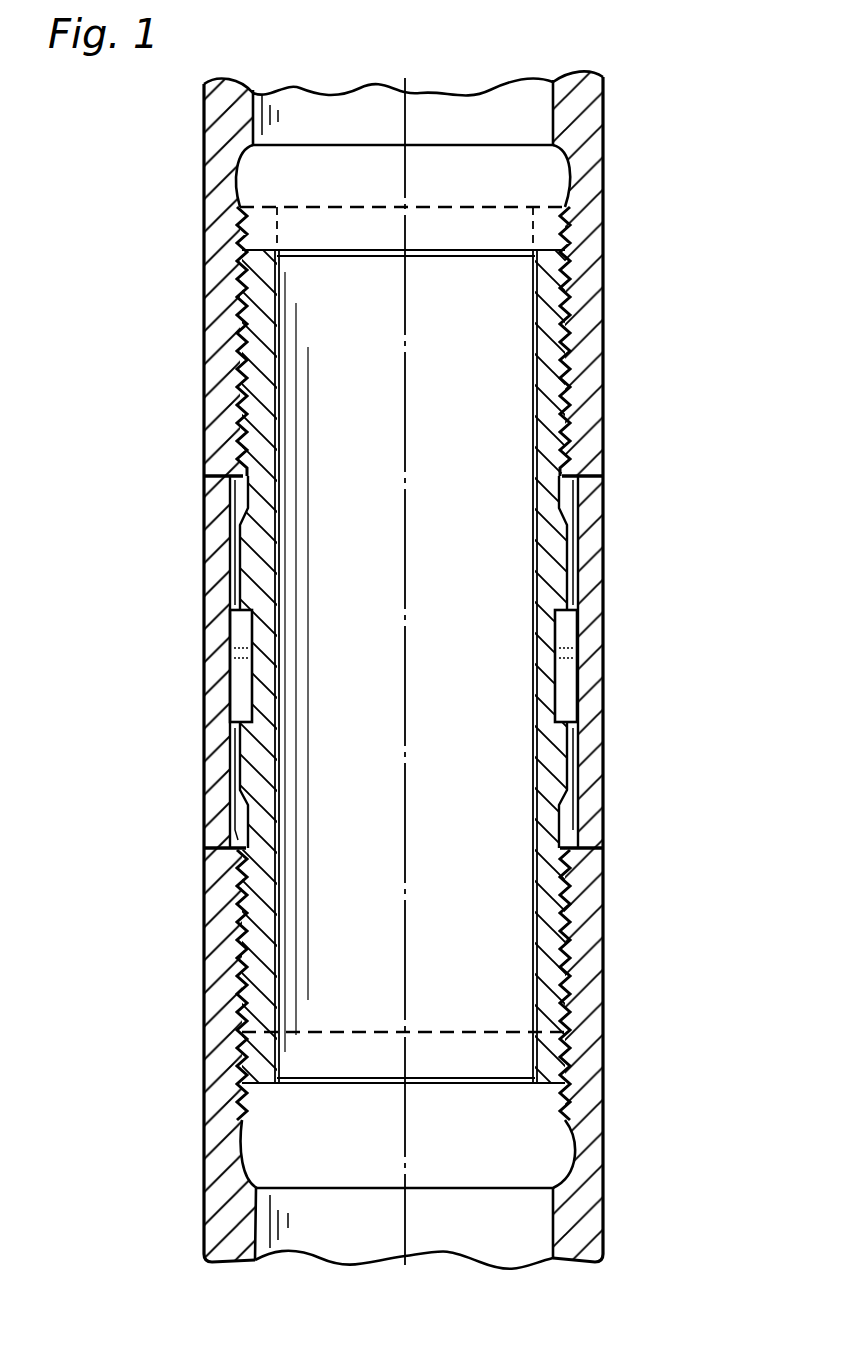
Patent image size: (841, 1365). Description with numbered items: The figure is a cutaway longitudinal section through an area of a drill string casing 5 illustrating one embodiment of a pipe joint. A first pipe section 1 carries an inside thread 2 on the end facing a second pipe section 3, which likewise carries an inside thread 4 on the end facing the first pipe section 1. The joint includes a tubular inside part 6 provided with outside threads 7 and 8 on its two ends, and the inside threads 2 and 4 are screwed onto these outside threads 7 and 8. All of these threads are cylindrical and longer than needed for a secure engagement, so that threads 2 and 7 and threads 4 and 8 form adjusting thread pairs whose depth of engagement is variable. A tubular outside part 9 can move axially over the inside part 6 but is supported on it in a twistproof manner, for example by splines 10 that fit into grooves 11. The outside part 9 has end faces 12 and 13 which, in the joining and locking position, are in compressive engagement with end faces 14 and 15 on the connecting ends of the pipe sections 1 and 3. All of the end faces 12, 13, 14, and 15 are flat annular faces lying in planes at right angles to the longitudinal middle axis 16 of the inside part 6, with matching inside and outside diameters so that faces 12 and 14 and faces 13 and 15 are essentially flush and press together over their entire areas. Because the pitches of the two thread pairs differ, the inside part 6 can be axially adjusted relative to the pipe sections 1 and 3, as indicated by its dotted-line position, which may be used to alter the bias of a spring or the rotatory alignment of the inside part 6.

The first pipe section 1 is at (592, 184).
The inside thread 2 is at (575, 393).
The second pipe section 3 is at (590, 1017).
The inside thread 4 is at (565, 922).
The drill string casing 5 is at (615, 288).
The tubular inside part 6 is at (277, 590).
The outside thread 7 is at (243, 300).
The outside thread 8 is at (255, 992).
The tubular outside part 9 is at (590, 605).
The splines 10 is at (243, 688).
The grooves 11 is at (240, 772).
The end face 12 is at (600, 487).
The end face 13 is at (585, 838).
The end face 14 is at (204, 462).
The end face 15 is at (206, 850).
The longitudinal middle axis 16 is at (410, 670).